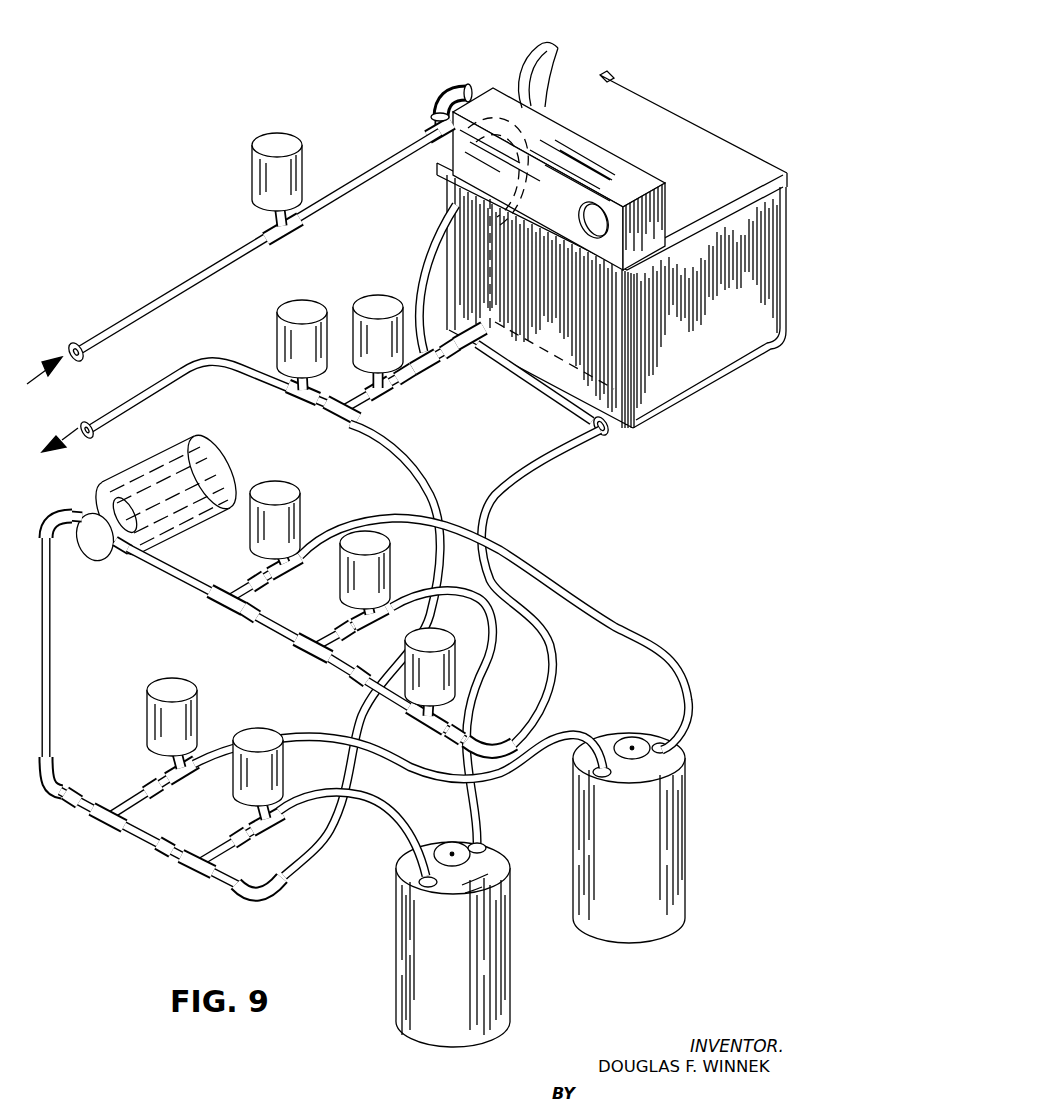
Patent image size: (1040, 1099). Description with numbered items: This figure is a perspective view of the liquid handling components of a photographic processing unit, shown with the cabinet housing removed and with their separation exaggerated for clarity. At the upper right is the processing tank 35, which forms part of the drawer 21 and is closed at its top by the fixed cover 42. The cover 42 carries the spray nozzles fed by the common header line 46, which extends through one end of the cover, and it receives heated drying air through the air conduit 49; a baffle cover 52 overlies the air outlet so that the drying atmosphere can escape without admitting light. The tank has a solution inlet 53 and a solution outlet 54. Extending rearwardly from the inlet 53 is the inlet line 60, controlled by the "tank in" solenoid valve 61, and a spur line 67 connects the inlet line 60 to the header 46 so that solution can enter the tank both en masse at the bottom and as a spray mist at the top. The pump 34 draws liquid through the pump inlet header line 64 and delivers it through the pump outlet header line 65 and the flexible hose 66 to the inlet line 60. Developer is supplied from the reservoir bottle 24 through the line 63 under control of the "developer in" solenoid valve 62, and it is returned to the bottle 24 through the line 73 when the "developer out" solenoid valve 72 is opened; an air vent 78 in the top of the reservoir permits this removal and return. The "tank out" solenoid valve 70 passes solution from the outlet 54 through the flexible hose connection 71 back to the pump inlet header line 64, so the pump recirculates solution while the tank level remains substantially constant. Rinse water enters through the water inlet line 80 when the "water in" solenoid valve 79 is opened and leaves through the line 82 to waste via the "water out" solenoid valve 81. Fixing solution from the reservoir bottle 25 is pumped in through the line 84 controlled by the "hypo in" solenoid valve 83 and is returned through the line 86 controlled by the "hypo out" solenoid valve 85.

The drawer 21 is at (781, 280).
The reservoir bottle 24 is at (471, 1048).
The reservoir bottle 25 is at (686, 896).
The pump 34 is at (213, 450).
The processing tank 35 is at (547, 388).
The cover 42 is at (631, 172).
The common header line 46 is at (473, 93).
The air conduit 49 is at (557, 52).
The baffle cover 52 is at (584, 209).
The solution inlet 53 is at (472, 349).
The solution outlet 54 is at (600, 436).
The inlet line 60 is at (409, 378).
The "tank in" solenoid valve 61 is at (369, 298).
The "developer in" solenoid valve 62 is at (388, 567).
The developer supply line 63 is at (480, 832).
The pump inlet header line 64 is at (257, 624).
The pump outlet header line 65 is at (53, 702).
The flexible hose 66 is at (416, 463).
The spur line 67 is at (428, 270).
The "tank out" solenoid valve 70 is at (452, 677).
The flexible hose connection 71 is at (488, 522).
The "developer out" solenoid valve 72 is at (256, 730).
The developer return line 73 is at (417, 834).
The air vent 78 is at (630, 743).
The "water in" solenoid valve 79 is at (290, 140).
The water inlet line 80 is at (214, 268).
The "water out" solenoid valve 81 is at (291, 304).
The waste line 82 is at (191, 362).
The "hypo in" solenoid valve 83 is at (290, 486).
The hypo supply line 84 is at (689, 697).
The "hypo out" solenoid valve 85 is at (160, 680).
The hypo return line 86 is at (579, 737).